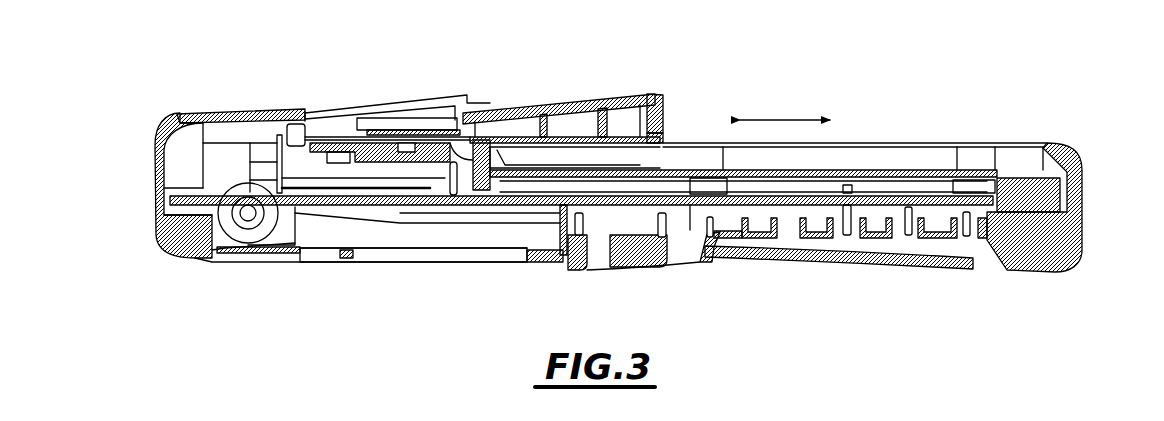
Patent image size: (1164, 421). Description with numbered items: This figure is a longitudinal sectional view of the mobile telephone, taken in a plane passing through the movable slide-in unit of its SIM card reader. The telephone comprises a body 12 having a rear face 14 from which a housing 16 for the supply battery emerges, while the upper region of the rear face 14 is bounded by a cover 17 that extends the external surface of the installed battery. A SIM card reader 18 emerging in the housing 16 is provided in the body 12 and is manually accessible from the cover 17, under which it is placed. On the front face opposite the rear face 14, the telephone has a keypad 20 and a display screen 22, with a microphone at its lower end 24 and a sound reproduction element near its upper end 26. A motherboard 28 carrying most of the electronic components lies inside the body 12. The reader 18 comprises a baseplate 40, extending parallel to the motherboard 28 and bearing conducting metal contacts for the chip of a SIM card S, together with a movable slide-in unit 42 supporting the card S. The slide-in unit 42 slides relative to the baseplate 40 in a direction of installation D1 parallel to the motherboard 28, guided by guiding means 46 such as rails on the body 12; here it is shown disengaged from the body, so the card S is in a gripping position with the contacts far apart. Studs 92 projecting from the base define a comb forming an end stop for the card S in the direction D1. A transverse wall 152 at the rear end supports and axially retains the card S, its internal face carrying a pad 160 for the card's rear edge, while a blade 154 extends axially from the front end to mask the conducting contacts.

The body 12 is at (150, 228).
The rear face 14 is at (202, 108).
The housing 16 is at (932, 136).
The cover 17 is at (243, 112).
The SIM card reader 18 is at (523, 105).
The keypad 20 is at (812, 270).
The display screen 22 is at (475, 262).
The lower end 24 is at (1075, 272).
The upper end 26 is at (192, 262).
The motherboard 28 is at (825, 190).
The baseplate 40 is at (433, 150).
The movable slide-in unit 42 is at (582, 103).
The guiding means 46 is at (380, 120).
The studs 92 is at (318, 128).
The transverse wall 152 is at (660, 110).
The blade 154 is at (420, 125).
The pad 160 is at (668, 150).
The SIM card S is at (622, 125).
The direction of installation D1 is at (783, 118).